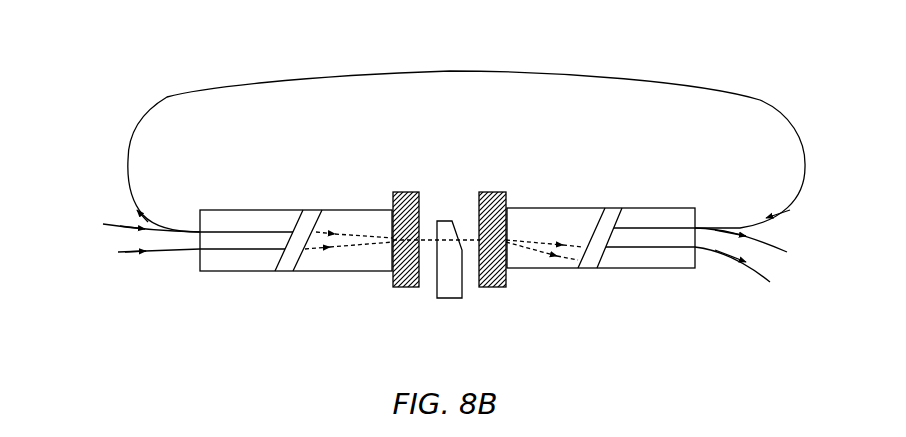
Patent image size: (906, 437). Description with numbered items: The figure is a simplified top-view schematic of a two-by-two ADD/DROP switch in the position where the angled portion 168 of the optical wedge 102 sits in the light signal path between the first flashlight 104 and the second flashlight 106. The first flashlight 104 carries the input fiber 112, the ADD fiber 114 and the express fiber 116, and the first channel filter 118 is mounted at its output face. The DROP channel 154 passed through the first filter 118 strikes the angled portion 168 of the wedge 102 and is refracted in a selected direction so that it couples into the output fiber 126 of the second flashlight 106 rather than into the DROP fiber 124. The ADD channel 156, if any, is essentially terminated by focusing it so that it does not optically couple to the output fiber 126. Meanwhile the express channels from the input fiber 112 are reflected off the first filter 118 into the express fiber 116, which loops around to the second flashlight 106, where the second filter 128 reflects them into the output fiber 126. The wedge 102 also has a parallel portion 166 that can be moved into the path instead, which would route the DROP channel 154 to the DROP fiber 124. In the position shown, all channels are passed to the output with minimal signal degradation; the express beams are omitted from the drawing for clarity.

The optical wedge 102 is at (445, 220).
The first flashlight 104 is at (301, 196).
The second flashlight 106 is at (615, 193).
The input fiber 112 is at (140, 253).
The ADD fiber 114 is at (112, 224).
The express fiber 116 is at (445, 71).
The first channel filter 118 is at (407, 287).
The DROP fiber 124 is at (767, 246).
The output fiber 126 is at (735, 255).
The second channel filter 128 is at (493, 287).
The DROP channel 154 is at (535, 242).
The ADD channel 156 is at (537, 255).
The parallel portion 166 is at (463, 291).
The angled portion 168 is at (458, 237).